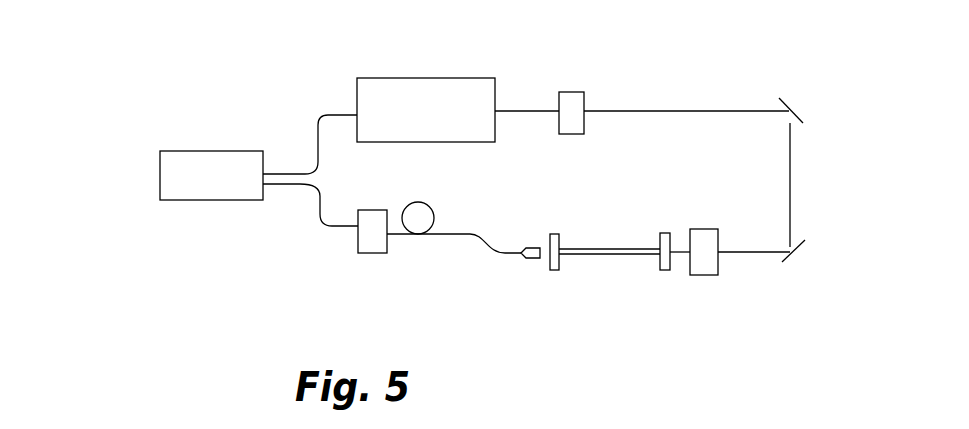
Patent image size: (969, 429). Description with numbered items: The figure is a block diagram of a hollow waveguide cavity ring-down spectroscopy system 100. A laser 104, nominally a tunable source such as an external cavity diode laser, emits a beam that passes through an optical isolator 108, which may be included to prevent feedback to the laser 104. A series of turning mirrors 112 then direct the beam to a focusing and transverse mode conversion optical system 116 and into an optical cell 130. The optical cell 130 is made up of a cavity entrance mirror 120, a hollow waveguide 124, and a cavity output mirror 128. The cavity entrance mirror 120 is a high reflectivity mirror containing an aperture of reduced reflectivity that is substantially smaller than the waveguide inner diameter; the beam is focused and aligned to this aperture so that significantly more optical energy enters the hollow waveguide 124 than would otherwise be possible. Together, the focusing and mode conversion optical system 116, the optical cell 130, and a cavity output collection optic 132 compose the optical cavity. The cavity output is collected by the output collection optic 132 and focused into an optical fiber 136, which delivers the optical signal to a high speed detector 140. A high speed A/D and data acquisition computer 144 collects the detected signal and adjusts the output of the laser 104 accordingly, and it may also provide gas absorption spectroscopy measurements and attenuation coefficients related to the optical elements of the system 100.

The HWG-CRDS system 100 is at (312, 45).
The laser 104 is at (397, 92).
The optical isolator 108 is at (573, 100).
The turning mirrors 112 is at (790, 103).
The focusing and transverse mode conversion optical system 116 is at (698, 267).
The cavity entrance mirror 120 is at (667, 270).
The hollow waveguide 124 is at (630, 253).
The cavity output mirror 128 is at (558, 270).
The optical cell 130 is at (688, 358).
The cavity output collection optic 132 is at (525, 260).
The optical fiber 136 is at (437, 237).
The high speed detector 140 is at (377, 255).
The high speed A/D and data acquisition computer 144 is at (220, 195).